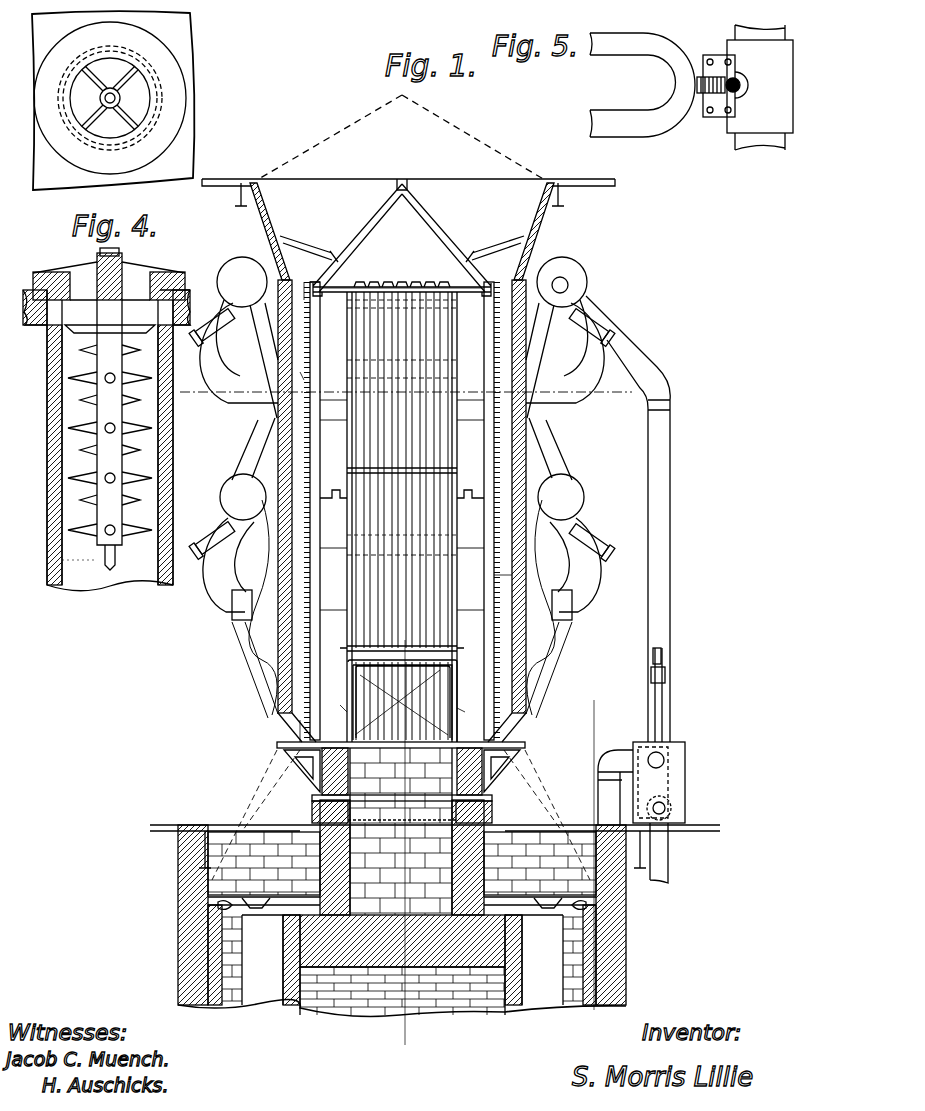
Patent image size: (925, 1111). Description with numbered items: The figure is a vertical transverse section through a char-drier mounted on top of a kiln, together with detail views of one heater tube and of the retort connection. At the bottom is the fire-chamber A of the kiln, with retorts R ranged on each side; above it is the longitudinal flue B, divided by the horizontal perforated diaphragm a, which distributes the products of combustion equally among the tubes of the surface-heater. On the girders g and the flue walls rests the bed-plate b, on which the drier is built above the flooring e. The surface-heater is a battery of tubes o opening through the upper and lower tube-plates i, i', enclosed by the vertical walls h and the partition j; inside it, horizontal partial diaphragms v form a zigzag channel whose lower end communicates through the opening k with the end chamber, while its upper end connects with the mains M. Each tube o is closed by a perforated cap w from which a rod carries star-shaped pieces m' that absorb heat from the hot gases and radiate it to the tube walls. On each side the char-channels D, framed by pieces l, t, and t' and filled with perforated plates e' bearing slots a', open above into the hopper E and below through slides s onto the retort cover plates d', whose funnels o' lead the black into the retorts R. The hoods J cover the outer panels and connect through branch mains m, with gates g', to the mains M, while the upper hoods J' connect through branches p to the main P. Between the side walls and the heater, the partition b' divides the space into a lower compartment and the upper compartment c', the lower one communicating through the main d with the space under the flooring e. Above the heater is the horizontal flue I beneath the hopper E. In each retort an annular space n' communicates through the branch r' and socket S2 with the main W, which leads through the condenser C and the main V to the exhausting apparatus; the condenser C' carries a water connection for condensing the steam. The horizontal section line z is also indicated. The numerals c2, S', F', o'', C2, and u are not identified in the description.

In FIG. 1, the hopper E is at (401, 137).
In FIG. 1, the horizontal flue I is at (402, 261).
In FIG. 1, the funnel o' is at (402, 240).
In FIG. 1, the upper tube-plate i is at (402, 273).
In FIG. 1, the perforated cap w is at (370, 287).
In FIG. 4, the perforated cap w is at (106, 420).
In FIG. 1, the char-channel D is at (402, 511).
In FIG. 1, the upper air compartment c' is at (398, 511).
In FIG. 1, the lining top c2 is at (312, 316).
In FIG. 1, the middle horizontal framing-piece of inner wall t' is at (304, 307).
In FIG. 1, the horizontal framing-piece of front wall l is at (300, 377).
In FIG. 1, the horizontal partial diaphragm v is at (389, 517).
In FIG. 1, the support S' is at (402, 400).
In FIG. 1, the slot a' is at (371, 472).
In FIG. 1, the condenser C' is at (402, 458).
In FIG. 1, the horizontal partition b' is at (402, 487).
In FIG. 1, the condenser C is at (402, 555).
In FIG. 1, the tube o is at (402, 525).
In FIG. 4, the tube o is at (79, 565).
In FIG. 1, the perforated plate e' is at (502, 576).
In FIG. 1, the main d is at (402, 620).
In FIG. 1, the vertical wall of heater h is at (402, 651).
In FIG. 1, the opening k is at (402, 701).
In FIG. 1, the vertical partition j is at (338, 711).
In FIG. 1, the lower tube-plate i' is at (463, 711).
In FIG. 1, the section line z is at (406, 382).
In FIG. 1, the slide s is at (534, 748).
In FIG. 1, the horizontal framing-piece of inner wall t is at (279, 727).
In FIG. 1, the girder g is at (402, 778).
In FIG. 1, the bed-plate b is at (401, 815).
In FIG. 1, the longitudinal flue B is at (402, 831).
In FIG. 1, the perforated diaphragm a is at (402, 809).
In FIG. 1, the flooring e is at (418, 838).
In FIG. 1, the flue chamber F' is at (402, 863).
In FIG. 1, the retort cover plate d' is at (402, 891).
In FIG. 1, the cup o'' is at (402, 904).
In FIG. 1, the branch r' is at (411, 912).
In FIG. 5, the branch r' is at (719, 100).
In FIG. 1, the main W is at (600, 933).
In FIG. 5, the main W is at (760, 97).
In FIG. 1, the annular space n' is at (402, 959).
In FIG. 1, the retort R is at (402, 960).
In FIG. 5, the retort R is at (642, 85).
In FIG. 1, the fire-chamber A is at (402, 1004).
In FIG. 1, the main P is at (402, 282).
In FIG. 1, the branch p is at (402, 351).
In FIG. 1, the upper hood J' is at (398, 360).
In FIG. 1, the gate g' is at (405, 429).
In FIG. 1, the main M is at (402, 469).
In FIG. 1, the branch main m is at (402, 565).
In FIG. 1, the hood J is at (402, 609).
In FIG. 1, the main V is at (628, 589).
In FIG. 1, the control box C2 is at (652, 783).
In FIG. 4, the shaft u is at (110, 407).
In FIG. 4, the star-shape piece m' is at (112, 451).
In FIG. 5, the socket S2 is at (722, 77).